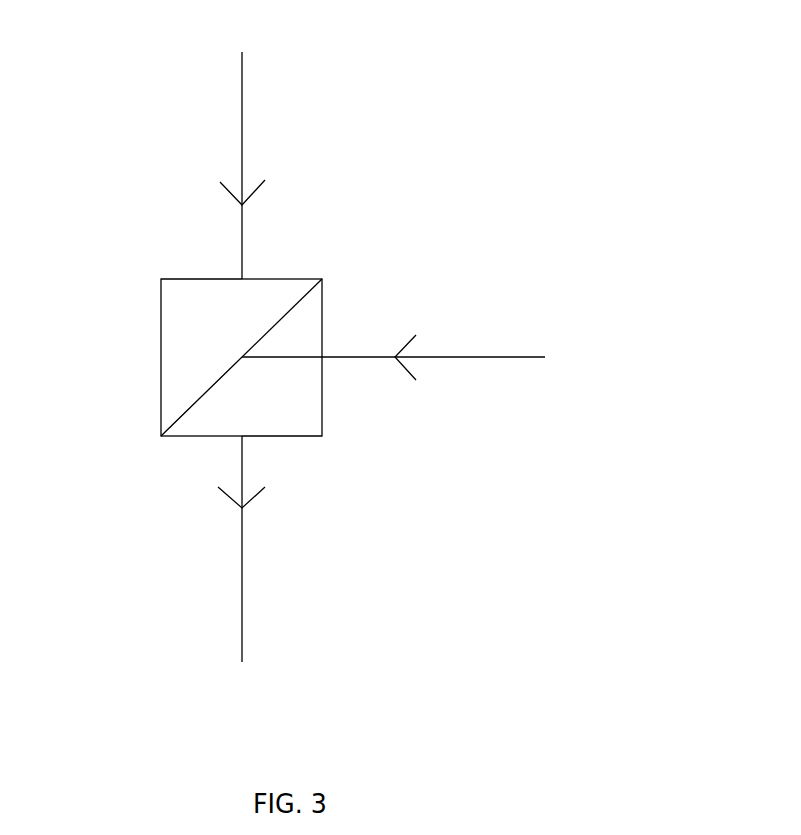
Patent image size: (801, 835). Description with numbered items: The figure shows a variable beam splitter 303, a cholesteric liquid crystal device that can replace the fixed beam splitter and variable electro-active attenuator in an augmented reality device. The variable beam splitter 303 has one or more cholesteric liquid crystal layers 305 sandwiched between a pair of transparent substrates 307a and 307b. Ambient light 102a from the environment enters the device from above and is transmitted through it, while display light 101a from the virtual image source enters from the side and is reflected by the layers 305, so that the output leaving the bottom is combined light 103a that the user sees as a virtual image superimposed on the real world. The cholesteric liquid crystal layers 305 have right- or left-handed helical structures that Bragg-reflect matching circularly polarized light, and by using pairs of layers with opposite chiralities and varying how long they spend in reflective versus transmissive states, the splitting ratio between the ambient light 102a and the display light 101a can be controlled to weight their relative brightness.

The ambient light 102a is at (265, 149).
The variable beam splitter 303 is at (471, 322).
The transparent substrate 307a is at (173, 305).
The cholesteric liquid crystal layers 305 is at (208, 388).
The display light 101a is at (501, 388).
The transparent substrate 307b is at (283, 420).
The combined light 103a is at (226, 596).